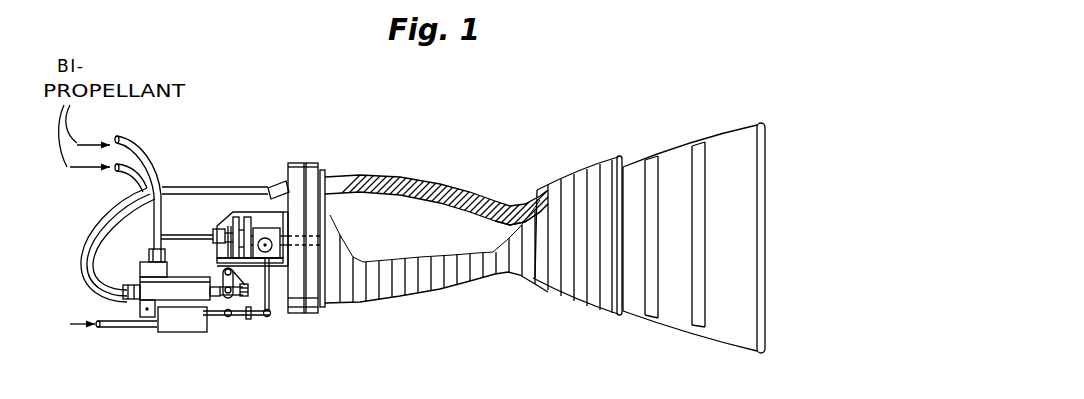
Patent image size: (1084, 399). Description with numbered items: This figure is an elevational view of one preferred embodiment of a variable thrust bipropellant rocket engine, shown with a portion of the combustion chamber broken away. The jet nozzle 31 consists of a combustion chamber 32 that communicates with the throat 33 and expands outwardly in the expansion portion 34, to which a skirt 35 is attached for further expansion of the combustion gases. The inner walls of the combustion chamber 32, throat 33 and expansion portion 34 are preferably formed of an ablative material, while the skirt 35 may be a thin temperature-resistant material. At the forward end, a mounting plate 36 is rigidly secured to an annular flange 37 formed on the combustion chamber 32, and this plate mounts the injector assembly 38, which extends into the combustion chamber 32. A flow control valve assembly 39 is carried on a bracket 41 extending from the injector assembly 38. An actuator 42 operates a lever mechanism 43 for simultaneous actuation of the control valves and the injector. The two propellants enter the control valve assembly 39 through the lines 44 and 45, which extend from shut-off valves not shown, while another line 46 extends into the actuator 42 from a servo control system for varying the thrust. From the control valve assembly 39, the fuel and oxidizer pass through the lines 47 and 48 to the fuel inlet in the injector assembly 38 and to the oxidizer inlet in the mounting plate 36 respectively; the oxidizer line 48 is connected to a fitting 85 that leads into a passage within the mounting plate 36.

The jet nozzle 31 is at (649, 228).
The combustion chamber 32 is at (478, 250).
The throat 33 is at (493, 225).
The expansion portion 34 is at (598, 163).
The skirt 35 is at (740, 124).
The mounting plate 36 is at (306, 161).
The annular flange 37 is at (324, 169).
The injector assembly 38 is at (262, 204).
The flow control valve assembly 39 is at (191, 314).
The bracket 41 is at (216, 221).
The actuator 42 is at (193, 327).
The lever mechanism 43 is at (265, 318).
The propellant line 44 is at (134, 171).
The propellant line 45 is at (128, 156).
The servo control line 46 is at (110, 320).
The fuel line 47 is at (176, 234).
The oxidizer line 48 is at (210, 185).
The fitting 85 is at (280, 183).